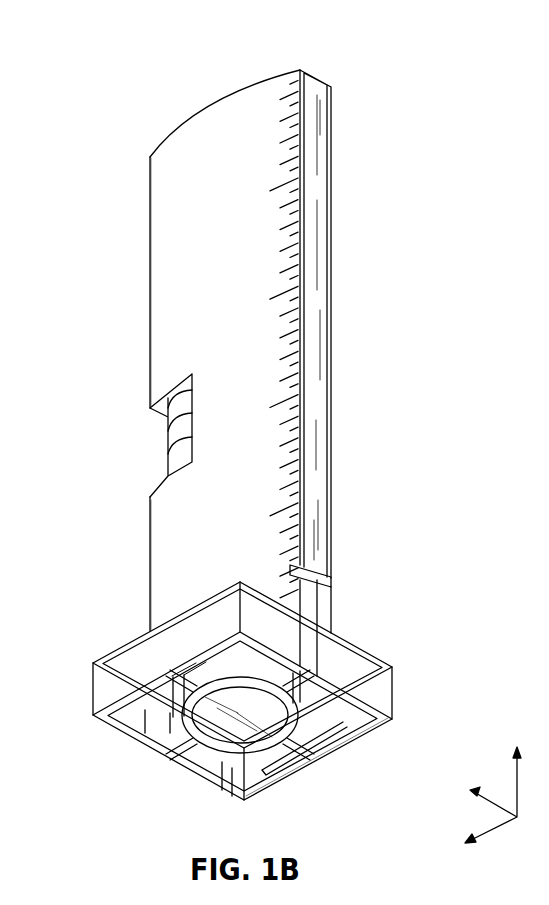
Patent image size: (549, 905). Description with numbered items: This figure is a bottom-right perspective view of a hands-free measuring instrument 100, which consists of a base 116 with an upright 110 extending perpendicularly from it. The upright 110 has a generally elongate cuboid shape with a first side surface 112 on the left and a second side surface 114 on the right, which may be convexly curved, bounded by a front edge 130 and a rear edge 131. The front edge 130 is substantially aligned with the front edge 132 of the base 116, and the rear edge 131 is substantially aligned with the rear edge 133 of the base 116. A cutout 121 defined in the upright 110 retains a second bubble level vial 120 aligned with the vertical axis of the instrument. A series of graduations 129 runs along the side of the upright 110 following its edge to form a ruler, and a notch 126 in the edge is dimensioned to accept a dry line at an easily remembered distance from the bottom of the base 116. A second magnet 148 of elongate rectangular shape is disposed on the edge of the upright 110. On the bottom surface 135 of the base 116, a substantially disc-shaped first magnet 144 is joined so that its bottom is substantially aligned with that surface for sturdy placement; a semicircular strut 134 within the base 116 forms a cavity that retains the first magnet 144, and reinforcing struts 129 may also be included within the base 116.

The hands-free measuring instrument 100 is at (366, 78).
The upright 110 is at (193, 118).
The first side surface 112 is at (333, 148).
The second side surface 114 is at (160, 232).
The base 116 is at (367, 651).
The second bubble level vial 120 is at (172, 433).
The cutout 121 is at (157, 488).
The notch 126 is at (322, 578).
The graduations 129 is at (266, 373).
The front edge 130 is at (150, 553).
The rear edge 131 is at (333, 430).
The front edge of base 132 is at (217, 783).
The rear edge of base 133 is at (383, 690).
The semicircular strut 134 is at (207, 693).
The bottom surface 135 is at (316, 760).
The first magnet 144 is at (225, 728).
The second magnet 148 is at (318, 252).